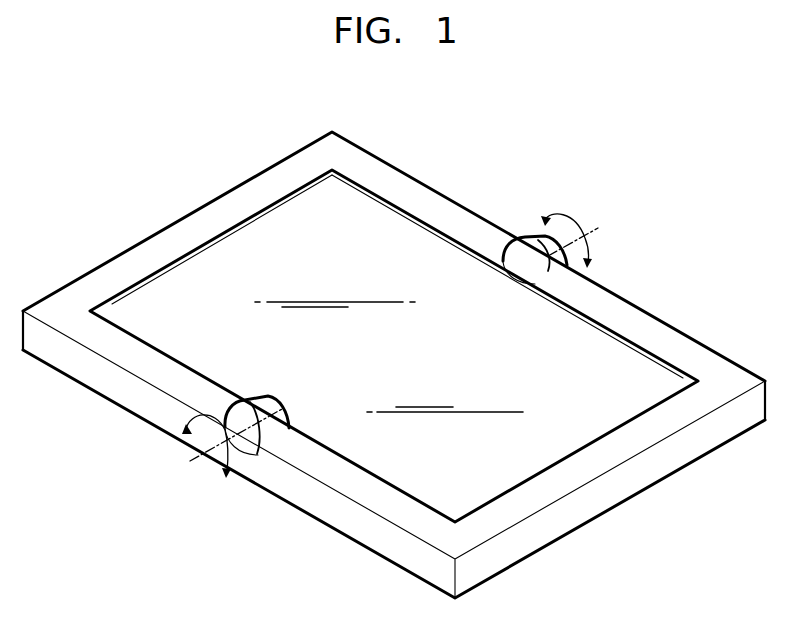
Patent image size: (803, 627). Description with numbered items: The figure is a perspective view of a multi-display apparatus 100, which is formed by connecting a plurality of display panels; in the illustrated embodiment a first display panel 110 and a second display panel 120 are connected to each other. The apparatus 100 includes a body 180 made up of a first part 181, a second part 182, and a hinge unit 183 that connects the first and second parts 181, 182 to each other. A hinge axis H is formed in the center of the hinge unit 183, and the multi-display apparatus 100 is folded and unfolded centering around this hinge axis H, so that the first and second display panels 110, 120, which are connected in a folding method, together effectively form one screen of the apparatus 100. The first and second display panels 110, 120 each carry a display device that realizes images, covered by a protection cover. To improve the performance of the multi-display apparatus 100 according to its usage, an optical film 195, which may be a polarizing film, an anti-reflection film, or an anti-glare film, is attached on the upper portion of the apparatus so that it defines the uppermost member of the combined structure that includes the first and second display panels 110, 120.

The multi-display apparatus 100 is at (194, 184).
The first display panel 110 is at (403, 232).
The second display panel 120 is at (626, 361).
The body 180 is at (743, 243).
The first part 181 is at (459, 205).
The second part 182 is at (712, 350).
The hinge unit 183 is at (555, 250).
The optical film 195 is at (550, 442).
The hinge axis H is at (192, 458).